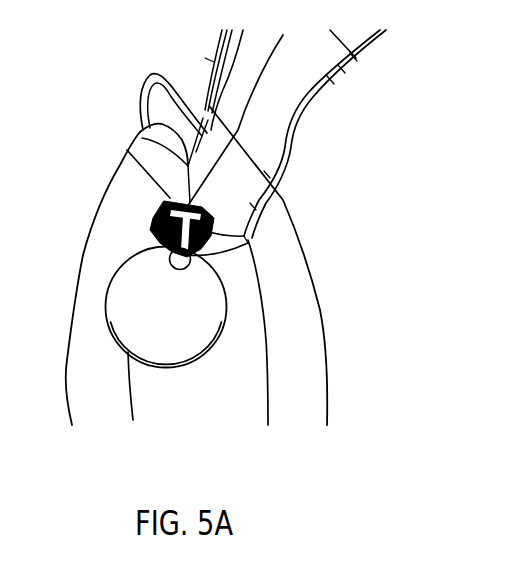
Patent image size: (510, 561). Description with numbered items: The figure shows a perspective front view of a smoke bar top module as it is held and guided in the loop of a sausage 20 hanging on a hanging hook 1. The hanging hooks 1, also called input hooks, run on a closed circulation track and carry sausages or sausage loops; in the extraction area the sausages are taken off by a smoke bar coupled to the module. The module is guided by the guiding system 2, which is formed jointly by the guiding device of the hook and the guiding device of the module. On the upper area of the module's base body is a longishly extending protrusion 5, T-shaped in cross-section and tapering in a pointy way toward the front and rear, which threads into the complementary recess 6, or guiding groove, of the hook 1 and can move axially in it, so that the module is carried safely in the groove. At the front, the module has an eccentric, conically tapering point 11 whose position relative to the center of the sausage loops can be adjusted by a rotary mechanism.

The hanging hook 1 is at (289, 126).
The guiding system 2 is at (168, 198).
The protrusion 5 is at (164, 208).
The recess 6 is at (226, 247).
The point 11 is at (184, 366).
The sausage 20 is at (309, 270).